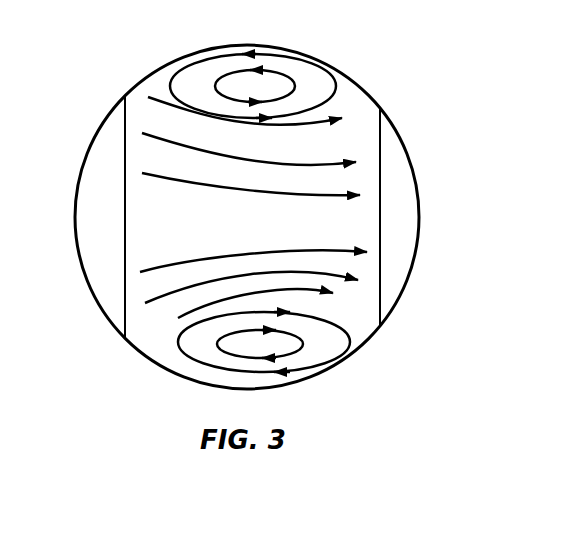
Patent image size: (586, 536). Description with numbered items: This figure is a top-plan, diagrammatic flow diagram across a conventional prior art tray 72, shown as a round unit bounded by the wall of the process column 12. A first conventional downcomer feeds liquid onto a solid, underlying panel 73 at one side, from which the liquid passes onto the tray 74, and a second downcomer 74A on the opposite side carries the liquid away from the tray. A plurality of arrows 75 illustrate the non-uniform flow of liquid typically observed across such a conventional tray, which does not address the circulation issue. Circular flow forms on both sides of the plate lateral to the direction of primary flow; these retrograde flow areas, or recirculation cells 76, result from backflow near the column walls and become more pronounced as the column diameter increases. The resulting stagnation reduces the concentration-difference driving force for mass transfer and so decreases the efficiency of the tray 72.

The cylindrical vessel wall 12 is at (400, 140).
The prior art tray 72 is at (357, 103).
The solid underlying panel 73 is at (105, 262).
The tray 74 is at (323, 222).
The second downcomer 74A is at (394, 251).
The arrows 75 is at (146, 134).
The recirculation cells 76 is at (220, 72).